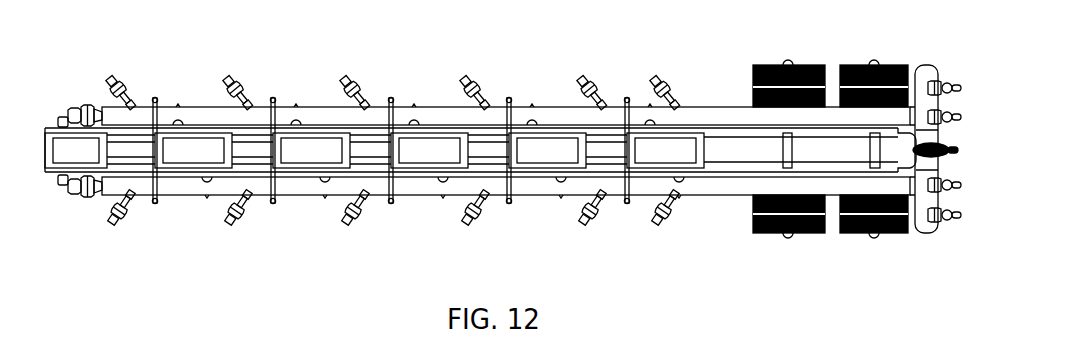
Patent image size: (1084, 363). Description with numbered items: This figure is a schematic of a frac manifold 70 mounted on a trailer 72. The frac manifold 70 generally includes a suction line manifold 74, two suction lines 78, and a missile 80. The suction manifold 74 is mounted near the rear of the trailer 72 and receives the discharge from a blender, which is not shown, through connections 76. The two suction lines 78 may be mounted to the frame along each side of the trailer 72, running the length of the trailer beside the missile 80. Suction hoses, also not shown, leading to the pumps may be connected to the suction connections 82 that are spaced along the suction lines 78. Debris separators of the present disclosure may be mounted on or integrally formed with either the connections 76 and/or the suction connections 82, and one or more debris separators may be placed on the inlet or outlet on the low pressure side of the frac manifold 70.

The frac manifold 70 is at (97, 57).
The trailer 72 is at (763, 65).
The suction line manifold 74 is at (922, 235).
The connections 76 is at (947, 75).
The suction lines 78 is at (702, 108).
The missile 80 is at (412, 160).
The suction connections 82 is at (240, 78).